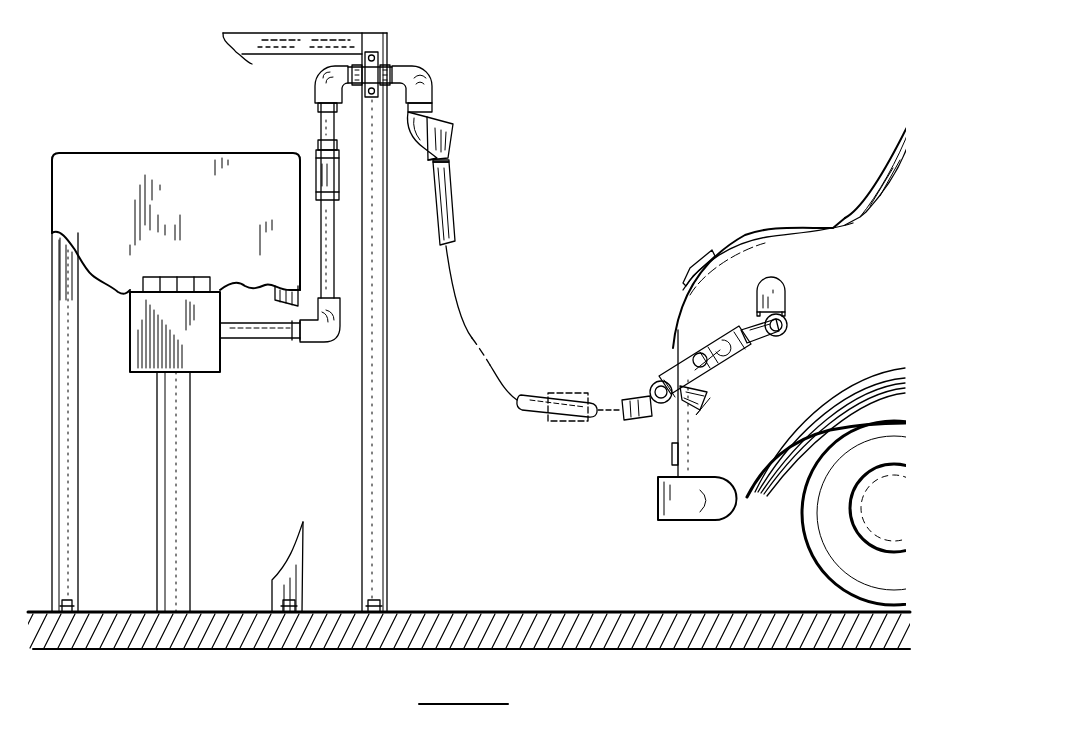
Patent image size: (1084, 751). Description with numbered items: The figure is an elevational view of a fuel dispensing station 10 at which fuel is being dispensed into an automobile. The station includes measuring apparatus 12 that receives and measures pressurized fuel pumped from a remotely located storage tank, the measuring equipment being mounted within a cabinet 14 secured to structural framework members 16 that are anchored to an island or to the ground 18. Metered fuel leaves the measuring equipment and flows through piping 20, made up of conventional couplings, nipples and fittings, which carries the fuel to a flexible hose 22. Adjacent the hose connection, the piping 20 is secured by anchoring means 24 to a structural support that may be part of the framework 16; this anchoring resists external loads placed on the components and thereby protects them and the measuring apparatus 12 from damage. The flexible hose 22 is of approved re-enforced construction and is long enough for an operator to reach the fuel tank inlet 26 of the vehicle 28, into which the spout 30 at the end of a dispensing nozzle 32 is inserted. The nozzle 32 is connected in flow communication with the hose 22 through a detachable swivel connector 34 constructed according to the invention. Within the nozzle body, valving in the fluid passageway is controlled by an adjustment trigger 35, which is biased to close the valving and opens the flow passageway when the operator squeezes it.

The dispensing station 10 is at (606, 97).
The measuring apparatus 12 is at (221, 360).
The cabinet 14 is at (176, 160).
The structural framework members 16 is at (80, 473).
The ground 18 is at (420, 611).
The piping 20 is at (279, 344).
The flexible hose 22 is at (451, 191).
The anchoring means 24 is at (381, 64).
The fuel tank inlet 26 is at (787, 334).
The vehicle 28 is at (801, 228).
The spout 30 is at (757, 342).
The dispensing nozzle 32 is at (729, 320).
The detachable swivel connector 34 is at (657, 408).
The adjustment trigger 35 is at (689, 410).